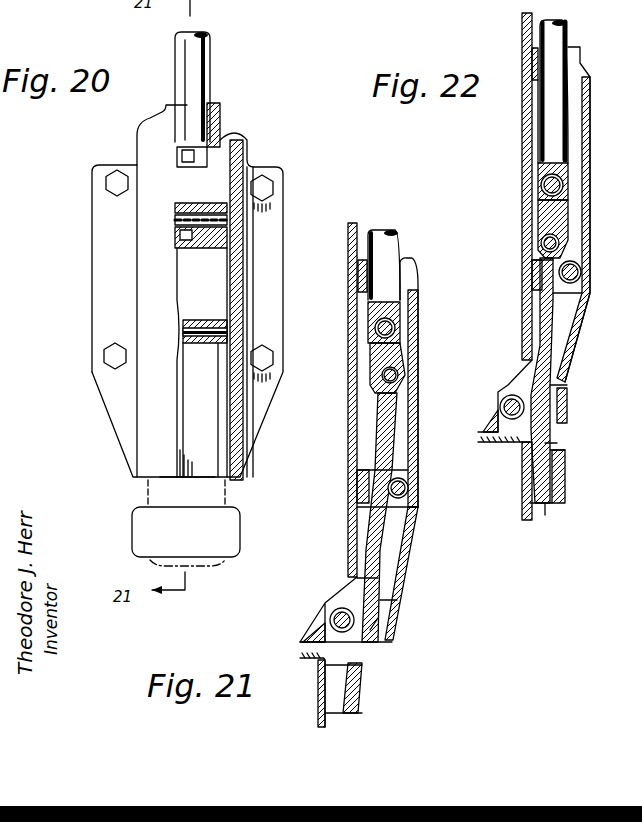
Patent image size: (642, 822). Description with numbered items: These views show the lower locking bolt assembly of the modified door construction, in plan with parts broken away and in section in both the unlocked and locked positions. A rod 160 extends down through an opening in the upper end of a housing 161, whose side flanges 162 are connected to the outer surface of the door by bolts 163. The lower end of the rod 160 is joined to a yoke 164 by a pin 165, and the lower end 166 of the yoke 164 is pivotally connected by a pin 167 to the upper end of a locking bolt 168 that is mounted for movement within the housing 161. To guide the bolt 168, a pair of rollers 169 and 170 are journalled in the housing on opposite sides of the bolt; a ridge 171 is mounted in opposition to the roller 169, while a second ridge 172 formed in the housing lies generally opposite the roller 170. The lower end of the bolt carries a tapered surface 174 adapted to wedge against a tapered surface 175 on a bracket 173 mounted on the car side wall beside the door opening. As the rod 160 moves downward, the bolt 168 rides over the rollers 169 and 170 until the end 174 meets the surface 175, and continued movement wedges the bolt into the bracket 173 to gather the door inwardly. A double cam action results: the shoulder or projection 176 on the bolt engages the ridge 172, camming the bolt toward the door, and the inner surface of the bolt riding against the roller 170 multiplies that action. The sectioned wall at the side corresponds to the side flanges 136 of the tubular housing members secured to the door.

In FIG. 20, the rod 160 is at (193, 65).
In FIG. 21, the rod 160 is at (390, 250).
In FIG. 22, the rod 160 is at (557, 35).
In FIG. 20, the housing 161 is at (238, 258).
In FIG. 20, the side flanges 162 is at (268, 287).
In FIG. 21, the side flanges 162 is at (387, 382).
In FIG. 20, the bolts 163 is at (263, 192).
In FIG. 20, the yoke 164 is at (213, 143).
In FIG. 20, the pin 165 is at (213, 167).
In FIG. 21, the pin 165 is at (390, 325).
In FIG. 22, the pin 165 is at (540, 185).
In FIG. 20, the lower end of yoke 166 is at (190, 207).
In FIG. 20, the pin 167 is at (180, 223).
In FIG. 21, the pin 167 is at (393, 377).
In FIG. 22, the pin 167 is at (538, 243).
In FIG. 20, the locking bolt 168 is at (180, 285).
In FIG. 21, the locking bolt 168 is at (380, 420).
In FIG. 22, the locking bolt 168 is at (542, 333).
In FIG. 20, the roller 169 is at (238, 333).
In FIG. 21, the roller 169 is at (408, 482).
In FIG. 22, the roller 169 is at (581, 276).
In FIG. 21, the roller 170 is at (330, 616).
In FIG. 22, the roller 170 is at (500, 407).
In FIG. 21, the ridge 171 is at (367, 483).
In FIG. 22, the ridge 171 is at (537, 273).
In FIG. 21, the ridge 172 is at (397, 604).
In FIG. 22, the ridge 172 is at (567, 388).
In FIG. 20, the bracket 173 is at (228, 530).
In FIG. 21, the bracket 173 is at (358, 706).
In FIG. 22, the bracket 173 is at (565, 480).
In FIG. 20, the tapered surface 174 is at (203, 473).
In FIG. 21, the tapered surface 174 is at (370, 630).
In FIG. 22, the tapered surface 174 is at (545, 507).
In FIG. 21, the tapered surface 175 is at (343, 660).
In FIG. 22, the tapered surface 175 is at (560, 455).
In FIG. 21, the shoulder or projection 176 is at (357, 578).
In FIG. 22, the shoulder or projection 176 is at (557, 443).
In FIG. 22, the side flanges 136 is at (590, 358).